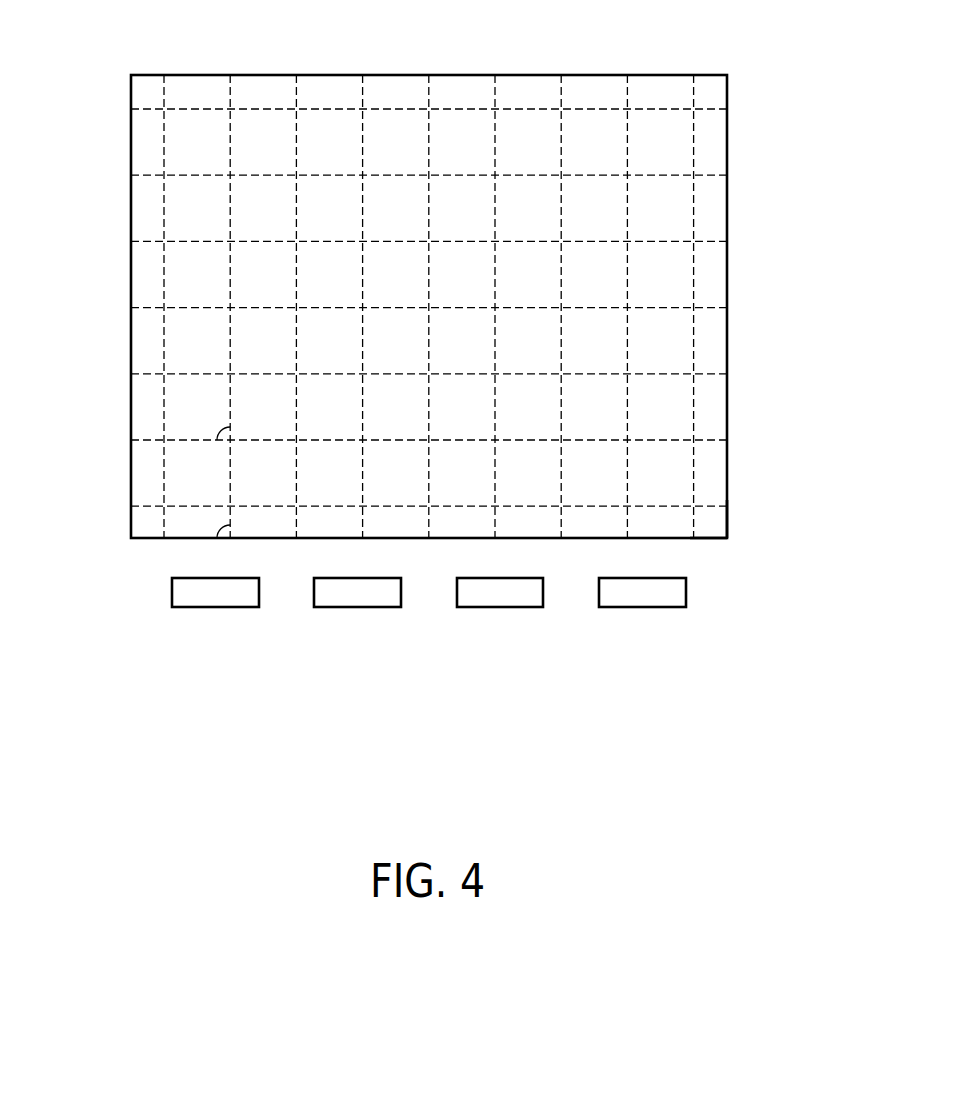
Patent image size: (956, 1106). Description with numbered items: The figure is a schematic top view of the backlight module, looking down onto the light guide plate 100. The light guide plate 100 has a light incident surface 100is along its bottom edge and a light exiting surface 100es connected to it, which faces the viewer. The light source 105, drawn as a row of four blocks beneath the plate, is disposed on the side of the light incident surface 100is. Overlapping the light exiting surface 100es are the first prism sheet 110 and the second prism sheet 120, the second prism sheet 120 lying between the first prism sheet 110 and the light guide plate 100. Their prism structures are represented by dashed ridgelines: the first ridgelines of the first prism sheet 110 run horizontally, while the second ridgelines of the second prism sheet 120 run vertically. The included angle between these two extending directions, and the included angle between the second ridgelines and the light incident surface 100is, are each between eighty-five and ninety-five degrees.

The light guide plate 100 is at (565, 538).
The light exiting surface 100es is at (707, 528).
The light incident surface 100is is at (708, 545).
The light source 105 is at (470, 592).
The first prism sheet 110 is at (148, 174).
The second prism sheet 120 is at (495, 93).